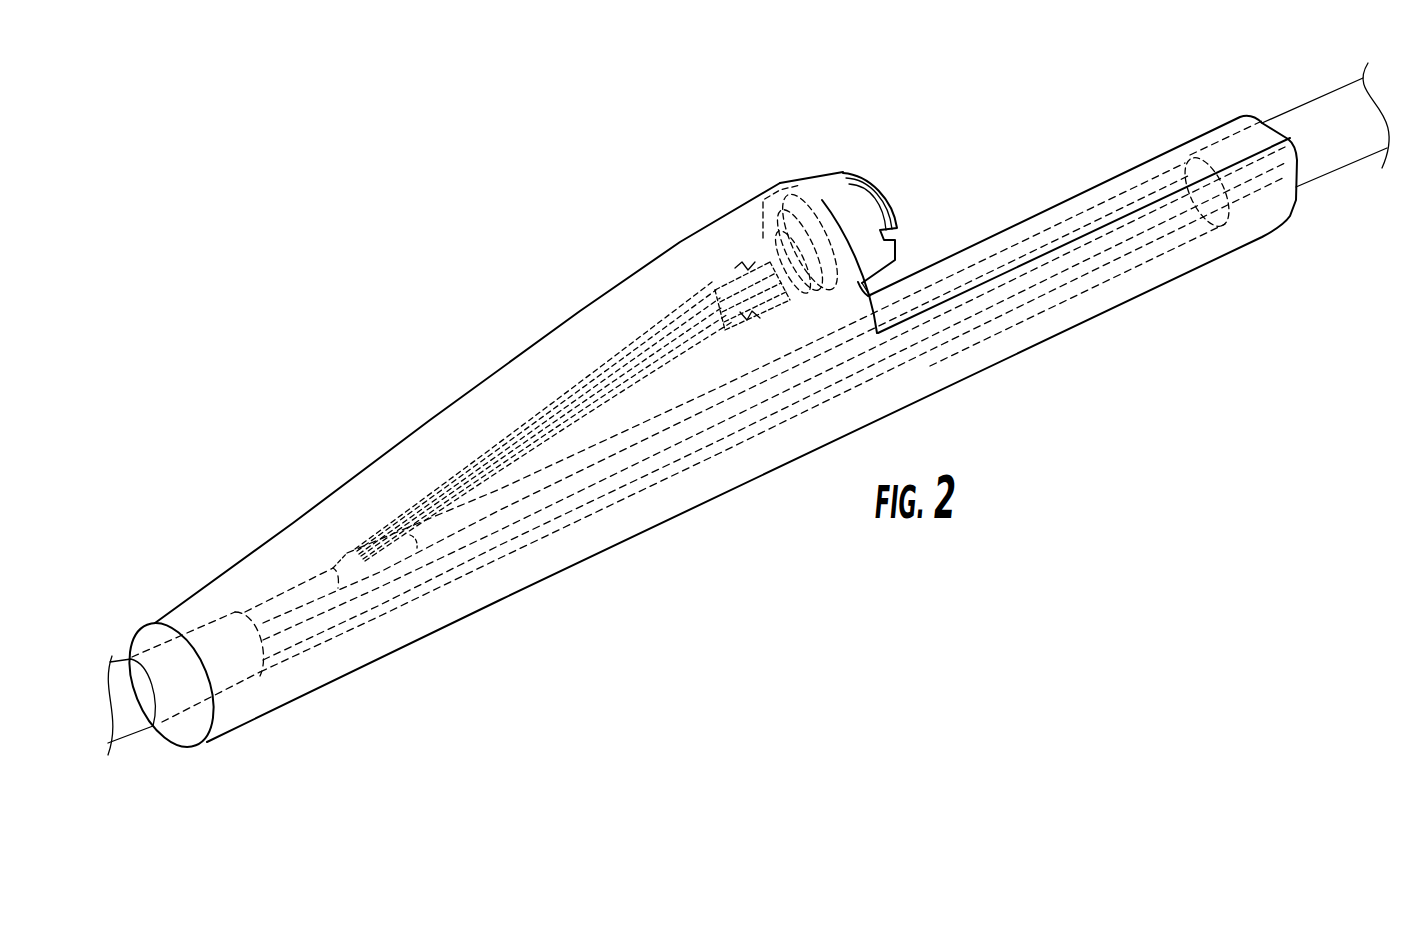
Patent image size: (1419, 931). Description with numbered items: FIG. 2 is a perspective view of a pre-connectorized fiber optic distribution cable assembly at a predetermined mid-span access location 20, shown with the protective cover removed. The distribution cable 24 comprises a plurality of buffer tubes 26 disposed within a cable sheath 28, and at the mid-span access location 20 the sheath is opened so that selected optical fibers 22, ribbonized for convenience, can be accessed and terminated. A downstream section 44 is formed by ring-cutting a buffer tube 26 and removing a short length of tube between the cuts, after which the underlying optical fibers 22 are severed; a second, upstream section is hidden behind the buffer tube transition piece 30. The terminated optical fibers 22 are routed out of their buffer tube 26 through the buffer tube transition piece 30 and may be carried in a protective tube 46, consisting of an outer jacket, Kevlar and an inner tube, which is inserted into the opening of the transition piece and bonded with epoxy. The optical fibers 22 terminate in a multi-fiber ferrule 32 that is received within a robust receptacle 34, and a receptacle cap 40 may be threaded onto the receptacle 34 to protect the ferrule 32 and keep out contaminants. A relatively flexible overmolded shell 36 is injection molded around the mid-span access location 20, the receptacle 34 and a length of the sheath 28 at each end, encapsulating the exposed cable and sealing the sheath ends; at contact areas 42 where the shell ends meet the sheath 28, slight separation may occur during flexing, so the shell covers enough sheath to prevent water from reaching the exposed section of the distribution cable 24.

The mid-span access location 20 is at (308, 293).
The optical fibers 22 is at (477, 457).
The distribution cable 24 is at (1317, 113).
The buffer tube 26 is at (270, 607).
The cable sheath 28 is at (207, 620).
The buffer tube transition piece 30 is at (345, 560).
The multi-fiber ferrule 32 is at (740, 270).
The receptacle 34 is at (794, 197).
The overmolded shell 36 is at (527, 358).
The receptacle cap 40 is at (851, 191).
The contact areas 42 is at (157, 695).
The downstream section 44 is at (883, 313).
The protective tube 46 is at (627, 343).